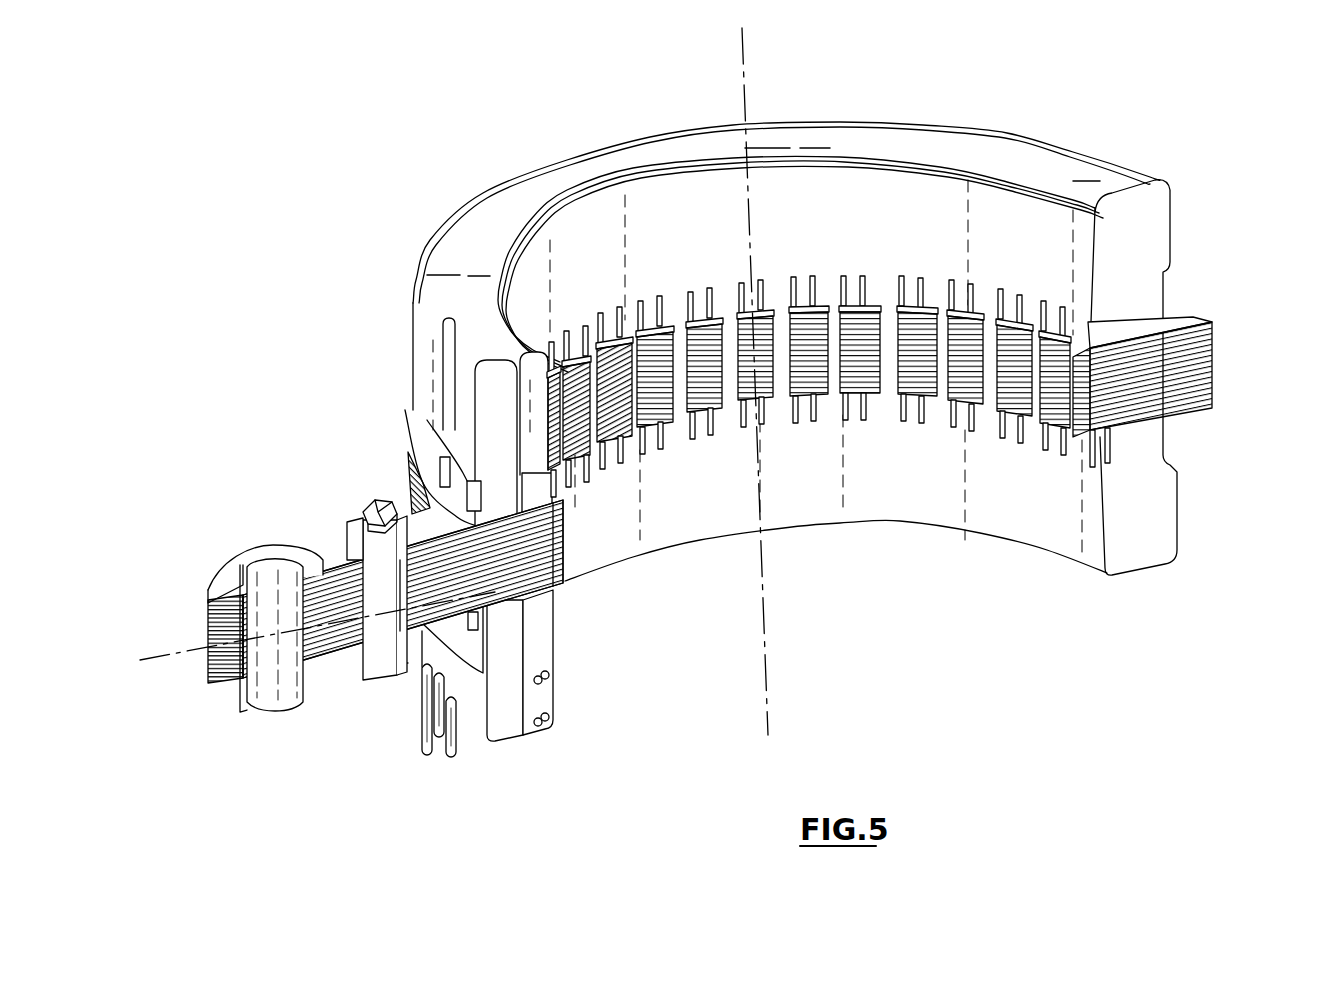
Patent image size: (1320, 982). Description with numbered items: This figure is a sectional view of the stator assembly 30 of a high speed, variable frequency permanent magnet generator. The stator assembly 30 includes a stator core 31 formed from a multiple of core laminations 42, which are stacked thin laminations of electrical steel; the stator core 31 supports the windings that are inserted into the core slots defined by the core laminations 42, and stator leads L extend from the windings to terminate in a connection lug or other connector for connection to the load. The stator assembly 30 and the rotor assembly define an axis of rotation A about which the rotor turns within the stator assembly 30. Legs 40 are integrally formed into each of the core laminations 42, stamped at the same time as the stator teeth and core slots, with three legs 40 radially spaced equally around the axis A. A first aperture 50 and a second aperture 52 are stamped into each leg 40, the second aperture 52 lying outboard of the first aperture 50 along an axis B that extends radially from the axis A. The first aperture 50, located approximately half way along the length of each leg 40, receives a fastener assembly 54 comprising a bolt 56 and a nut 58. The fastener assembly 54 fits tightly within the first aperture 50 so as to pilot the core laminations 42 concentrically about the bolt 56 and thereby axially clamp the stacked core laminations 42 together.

The stator assembly 30 is at (791, 351).
The stator core 31 is at (1198, 313).
The core laminations 42 is at (1218, 355).
The legs 40 is at (333, 655).
The first aperture 50 is at (490, 596).
The second aperture 52 is at (233, 655).
The fastener assembly 54 is at (352, 478).
The bolt 56 is at (358, 530).
The nut 58 is at (348, 672).
The axis of rotation A is at (743, 101).
The axis B is at (155, 660).
The stator leads L is at (455, 758).